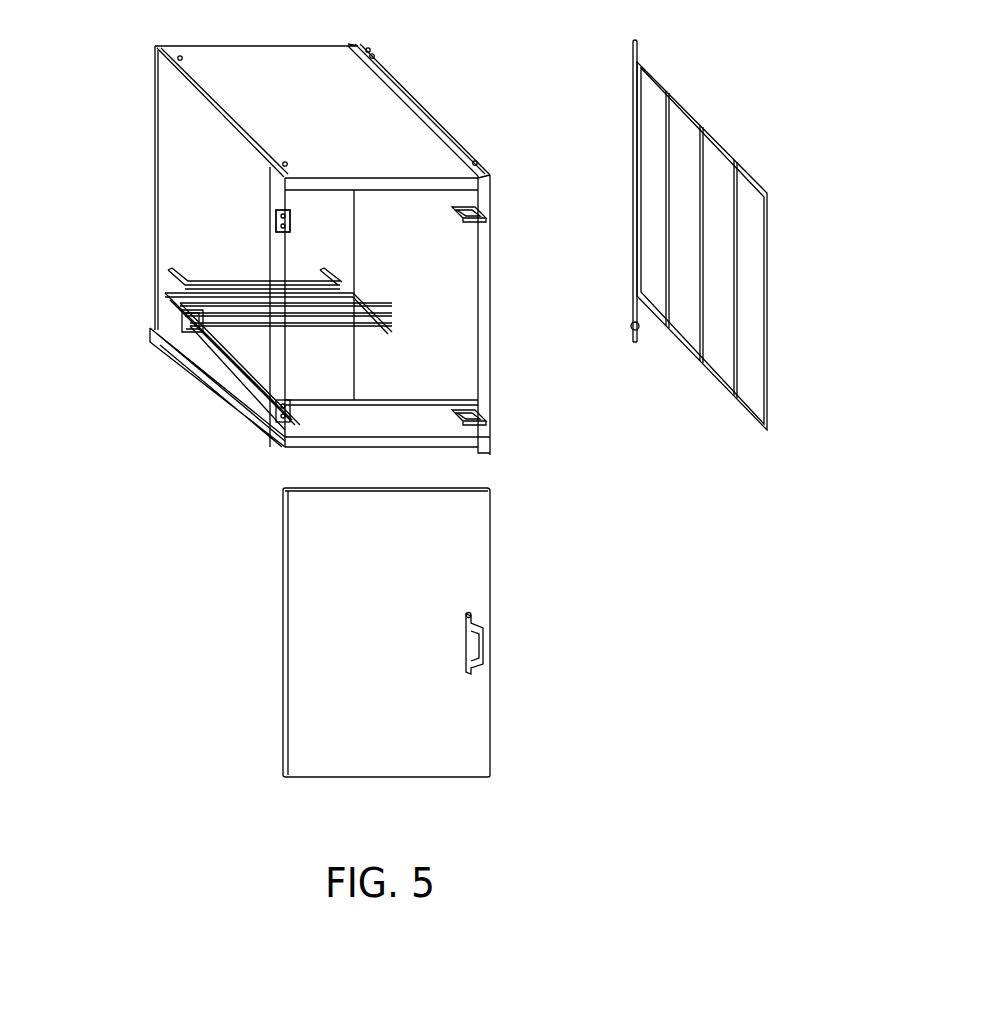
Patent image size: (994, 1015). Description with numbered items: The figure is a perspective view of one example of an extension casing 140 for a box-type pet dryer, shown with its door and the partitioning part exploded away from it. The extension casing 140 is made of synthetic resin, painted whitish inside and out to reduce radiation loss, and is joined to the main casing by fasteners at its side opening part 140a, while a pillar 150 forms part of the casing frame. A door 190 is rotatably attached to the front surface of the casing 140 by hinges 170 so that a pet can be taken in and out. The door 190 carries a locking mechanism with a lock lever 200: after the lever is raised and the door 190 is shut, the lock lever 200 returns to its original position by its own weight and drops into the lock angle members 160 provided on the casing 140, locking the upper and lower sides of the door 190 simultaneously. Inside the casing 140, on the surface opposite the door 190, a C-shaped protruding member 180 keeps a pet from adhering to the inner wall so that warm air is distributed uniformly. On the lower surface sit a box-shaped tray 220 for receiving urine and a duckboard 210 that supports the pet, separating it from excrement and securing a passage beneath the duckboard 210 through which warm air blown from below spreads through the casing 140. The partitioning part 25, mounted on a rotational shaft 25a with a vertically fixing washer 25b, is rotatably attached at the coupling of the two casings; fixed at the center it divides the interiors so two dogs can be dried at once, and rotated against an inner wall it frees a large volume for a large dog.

The side opening part 140a is at (448, 60).
The extension casing 140 is at (426, 118).
The pillar 150 is at (480, 353).
The lock angle member 160 is at (485, 218).
The hinge 170 is at (274, 224).
The protruding member 180 is at (185, 274).
The duckboard 210 is at (198, 315).
The tray 220 is at (214, 367).
The door 190 is at (476, 568).
The lock lever 200 is at (478, 652).
The partitioning part 25 is at (720, 147).
The rotational shaft 25a is at (638, 55).
The vertically fixing washer 25b is at (630, 330).